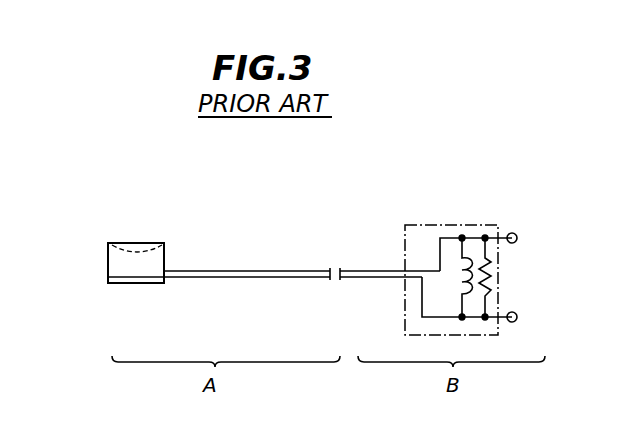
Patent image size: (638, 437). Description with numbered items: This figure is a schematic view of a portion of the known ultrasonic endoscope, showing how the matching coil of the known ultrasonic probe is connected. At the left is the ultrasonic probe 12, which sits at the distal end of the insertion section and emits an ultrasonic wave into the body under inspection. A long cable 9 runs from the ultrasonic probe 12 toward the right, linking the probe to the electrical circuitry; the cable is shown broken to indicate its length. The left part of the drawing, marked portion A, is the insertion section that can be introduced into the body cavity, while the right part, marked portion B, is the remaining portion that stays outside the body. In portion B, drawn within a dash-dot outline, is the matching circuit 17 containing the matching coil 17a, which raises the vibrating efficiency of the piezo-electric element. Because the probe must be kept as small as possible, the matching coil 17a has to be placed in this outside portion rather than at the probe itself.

The cable 9 is at (246, 270).
The ultrasonic probe 12 is at (106, 262).
The matching circuit 17 is at (451, 253).
The matching coil 17a is at (455, 262).